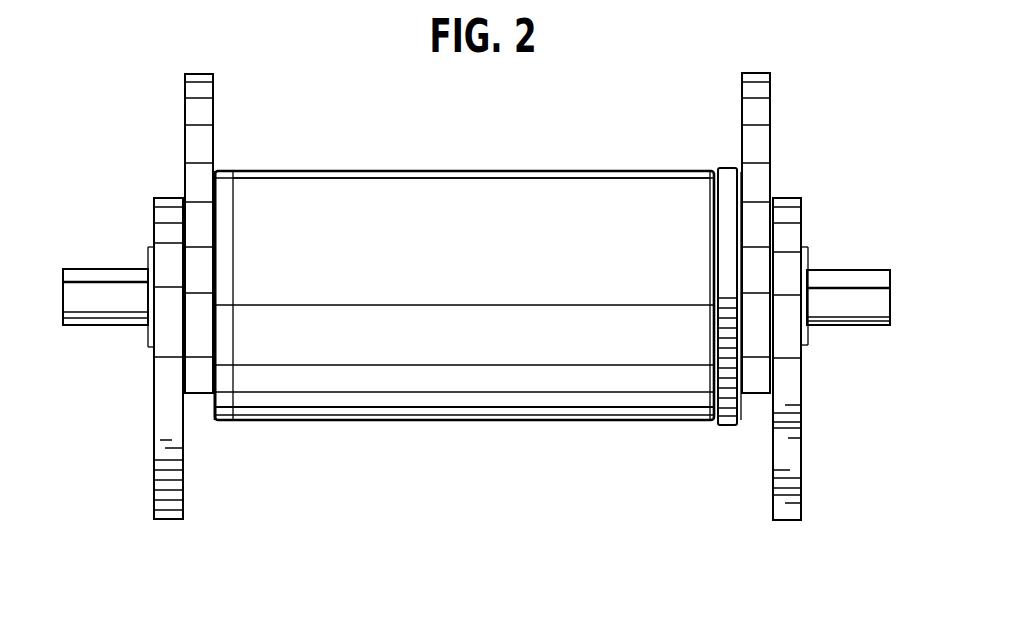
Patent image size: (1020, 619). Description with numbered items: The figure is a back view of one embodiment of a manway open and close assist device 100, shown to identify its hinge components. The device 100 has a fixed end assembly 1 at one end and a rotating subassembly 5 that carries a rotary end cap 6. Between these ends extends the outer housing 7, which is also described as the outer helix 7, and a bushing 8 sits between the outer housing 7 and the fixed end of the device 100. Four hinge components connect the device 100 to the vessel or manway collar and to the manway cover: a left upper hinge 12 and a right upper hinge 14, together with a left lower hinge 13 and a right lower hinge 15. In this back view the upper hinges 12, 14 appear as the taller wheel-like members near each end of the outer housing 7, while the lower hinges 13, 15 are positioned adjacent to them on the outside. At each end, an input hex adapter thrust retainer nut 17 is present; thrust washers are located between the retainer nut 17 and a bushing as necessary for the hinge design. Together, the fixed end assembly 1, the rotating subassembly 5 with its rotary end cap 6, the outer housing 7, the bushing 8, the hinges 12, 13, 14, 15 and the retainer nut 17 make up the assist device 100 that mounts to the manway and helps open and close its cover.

The manway open and close assist device 100 is at (559, 121).
The fixed end assembly 1 is at (725, 152).
The rotating subassembly 5 is at (345, 174).
The rotary end cap 6 is at (227, 170).
The outer housing/outer helix 7 is at (461, 195).
The bushing 8 is at (716, 168).
The left upper hinge 12 is at (185, 80).
The left lower hinge 13 is at (160, 198).
The right upper hinge 14 is at (760, 73).
The right lower hinge 15 is at (795, 198).
The input hex adapter thrust retainer nut 17 is at (103, 269).